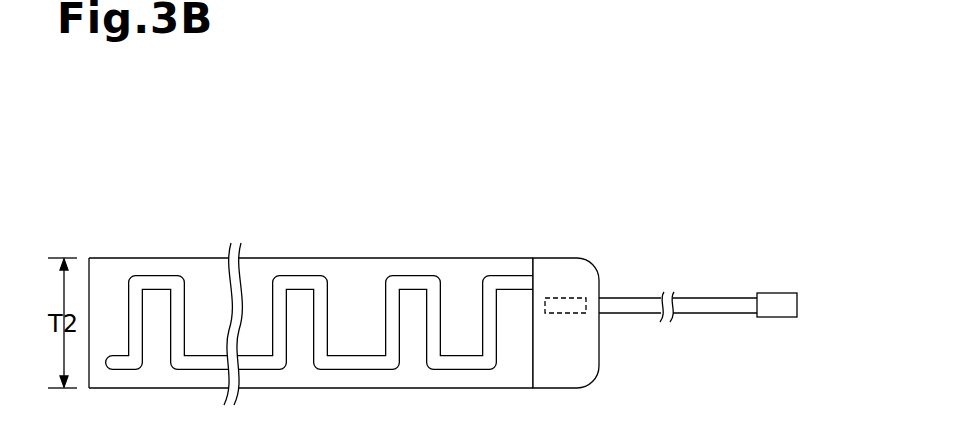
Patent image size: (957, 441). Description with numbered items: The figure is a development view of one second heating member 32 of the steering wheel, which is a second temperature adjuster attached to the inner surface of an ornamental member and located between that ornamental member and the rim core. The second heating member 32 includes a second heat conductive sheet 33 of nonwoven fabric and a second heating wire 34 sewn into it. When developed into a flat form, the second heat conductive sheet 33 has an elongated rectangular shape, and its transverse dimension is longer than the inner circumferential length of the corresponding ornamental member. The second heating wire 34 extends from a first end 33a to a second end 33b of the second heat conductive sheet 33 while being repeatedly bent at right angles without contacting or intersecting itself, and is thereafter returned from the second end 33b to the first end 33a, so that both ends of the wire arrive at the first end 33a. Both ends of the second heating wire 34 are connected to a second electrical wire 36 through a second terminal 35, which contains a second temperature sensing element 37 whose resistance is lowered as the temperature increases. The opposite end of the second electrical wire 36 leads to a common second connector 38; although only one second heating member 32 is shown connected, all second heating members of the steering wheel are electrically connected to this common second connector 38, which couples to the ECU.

The second heating member 32 is at (355, 203).
The second heat conductive sheet 33 is at (362, 257).
The first end 33a is at (502, 257).
The second end 33b is at (110, 257).
The second heating wire 34 is at (413, 275).
The second terminal 35 is at (576, 257).
The second electrical wire 36 is at (642, 298).
The second temperature sensing element 37 is at (558, 298).
The second connector 38 is at (772, 293).